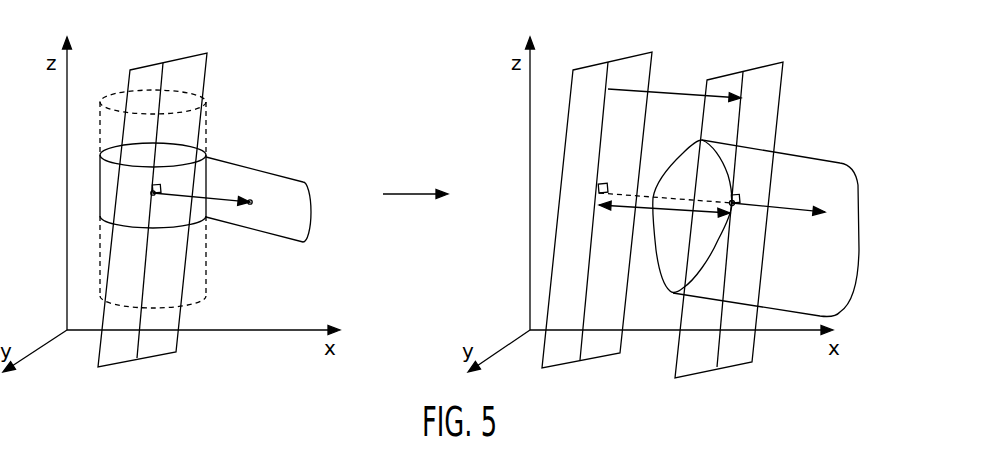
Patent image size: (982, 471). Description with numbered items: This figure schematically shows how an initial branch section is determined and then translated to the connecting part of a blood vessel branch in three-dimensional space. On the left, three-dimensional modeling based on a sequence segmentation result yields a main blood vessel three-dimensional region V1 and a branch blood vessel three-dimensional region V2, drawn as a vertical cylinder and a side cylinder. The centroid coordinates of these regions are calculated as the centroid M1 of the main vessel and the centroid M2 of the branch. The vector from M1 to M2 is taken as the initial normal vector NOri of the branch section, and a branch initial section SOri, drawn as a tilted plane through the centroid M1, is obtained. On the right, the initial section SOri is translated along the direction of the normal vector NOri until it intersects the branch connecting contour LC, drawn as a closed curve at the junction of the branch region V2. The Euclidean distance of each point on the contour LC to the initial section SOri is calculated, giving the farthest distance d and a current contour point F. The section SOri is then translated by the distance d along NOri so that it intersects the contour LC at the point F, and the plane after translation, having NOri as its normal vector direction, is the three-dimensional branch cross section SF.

The branch initial section SOri is at (375, 199).
The main blood vessel three-dimensional region V1 is at (141, 199).
The centroid of the main blood vessel M1 is at (141, 202).
The centroid of the branch blood vessel M2 is at (265, 217).
The branch blood vessel three-dimensional region V2 is at (541, 232).
The initial normal vector NOri is at (490, 191).
The three-dimensional branch cross section SF is at (695, 203).
The branch connecting contour LC is at (692, 211).
The current contour point F is at (671, 208).
The farthest distance d is at (664, 218).